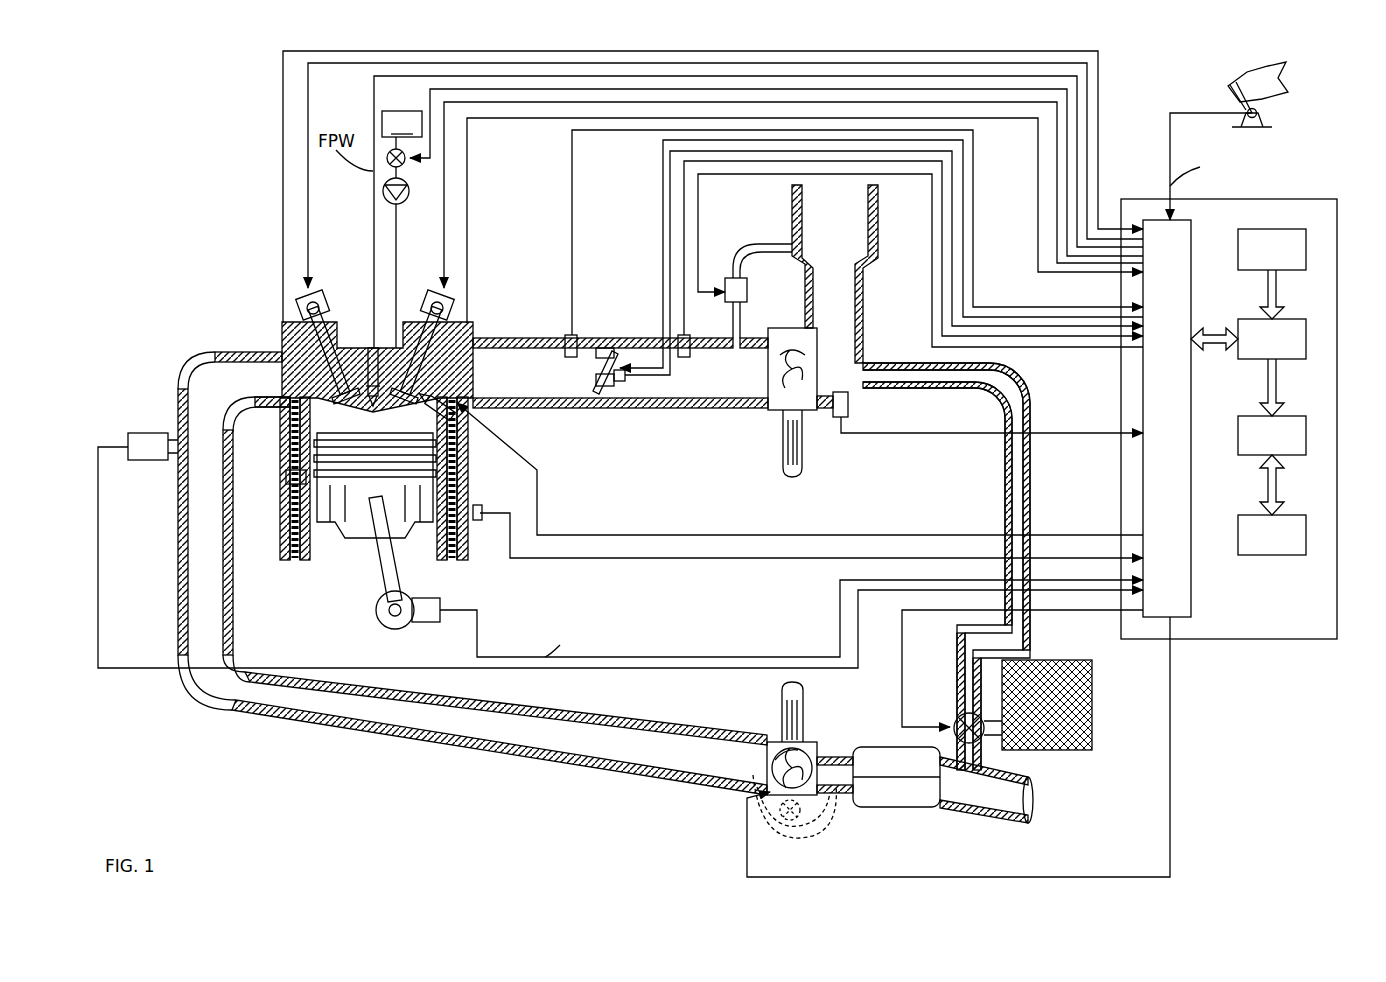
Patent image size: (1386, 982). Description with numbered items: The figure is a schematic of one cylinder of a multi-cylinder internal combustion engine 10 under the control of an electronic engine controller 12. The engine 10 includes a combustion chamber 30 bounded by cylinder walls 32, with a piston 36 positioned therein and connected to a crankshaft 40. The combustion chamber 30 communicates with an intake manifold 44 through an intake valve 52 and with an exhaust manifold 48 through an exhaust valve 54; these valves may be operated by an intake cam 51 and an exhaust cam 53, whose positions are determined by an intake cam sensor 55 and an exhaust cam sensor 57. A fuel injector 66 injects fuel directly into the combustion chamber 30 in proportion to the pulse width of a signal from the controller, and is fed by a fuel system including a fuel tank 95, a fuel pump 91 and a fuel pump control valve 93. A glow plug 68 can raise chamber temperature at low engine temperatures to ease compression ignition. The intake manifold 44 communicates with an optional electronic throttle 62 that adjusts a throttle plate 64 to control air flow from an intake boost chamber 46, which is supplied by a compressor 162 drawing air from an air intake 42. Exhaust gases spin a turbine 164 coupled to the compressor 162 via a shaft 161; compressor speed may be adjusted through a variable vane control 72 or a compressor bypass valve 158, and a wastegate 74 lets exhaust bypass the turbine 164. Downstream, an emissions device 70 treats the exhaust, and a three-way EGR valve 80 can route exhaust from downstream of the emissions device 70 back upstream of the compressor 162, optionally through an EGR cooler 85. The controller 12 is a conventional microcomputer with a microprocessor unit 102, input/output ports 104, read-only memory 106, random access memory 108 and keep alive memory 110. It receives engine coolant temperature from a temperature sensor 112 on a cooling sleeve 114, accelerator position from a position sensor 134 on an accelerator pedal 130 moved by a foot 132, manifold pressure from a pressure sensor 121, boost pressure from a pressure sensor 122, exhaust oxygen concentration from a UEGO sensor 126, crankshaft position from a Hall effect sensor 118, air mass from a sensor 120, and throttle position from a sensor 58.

The internal combustion engine 10 is at (222, 280).
The electronic engine controller 12 is at (1318, 200).
The combustion chamber 30 is at (300, 506).
The cylinder walls 32 is at (326, 560).
The piston 36 is at (360, 512).
The crankshaft 40 is at (388, 629).
The air intake 42 is at (845, 253).
The intake manifold 44 is at (530, 383).
The intake boost chamber 46 is at (708, 383).
The exhaust manifold 48 is at (260, 387).
The intake cam 51 is at (430, 290).
The intake valve 52 is at (415, 389).
The exhaust cam 53 is at (323, 288).
The exhaust valve 54 is at (330, 386).
The intake cam sensor 55 is at (452, 318).
The exhaust cam sensor 57 is at (303, 308).
The throttle position sensor 58 is at (625, 382).
The electronic throttle 62 is at (597, 346).
The throttle plate 64 is at (606, 350).
The fuel injector 66 is at (370, 386).
The glow plug 68 is at (463, 410).
The emissions device 70 is at (870, 807).
The variable vane control 72 is at (758, 786).
The wastegate 74 is at (792, 821).
The EGR valve 80 is at (955, 722).
The EGR cooler 85 is at (1092, 698).
The fuel pump 91 is at (402, 200).
The fuel pump control valve 93 is at (402, 167).
The fuel tank 95 is at (402, 130).
The microprocessor unit 102 is at (1306, 332).
The input/output ports 104 is at (1195, 228).
The read-only memory 106 is at (1306, 243).
The random access memory 108 is at (1306, 428).
The keep alive memory 110 is at (1306, 526).
The temperature sensor 112 is at (478, 509).
The cooling sleeve 114 is at (302, 478).
The Hall effect sensor 118 is at (430, 622).
The air mass sensor 120 is at (848, 413).
The pressure sensor 121 is at (567, 335).
The pressure sensor 122 is at (688, 335).
The universal exhaust gas oxygen sensor 126 is at (128, 441).
The accelerator pedal 130 is at (1234, 96).
The foot 132 is at (1286, 82).
The position sensor 134 is at (1272, 127).
The compressor bypass valve 158 is at (726, 282).
The shaft 161 is at (783, 456).
The compressor 162 is at (768, 410).
The turbine 164 is at (770, 742).